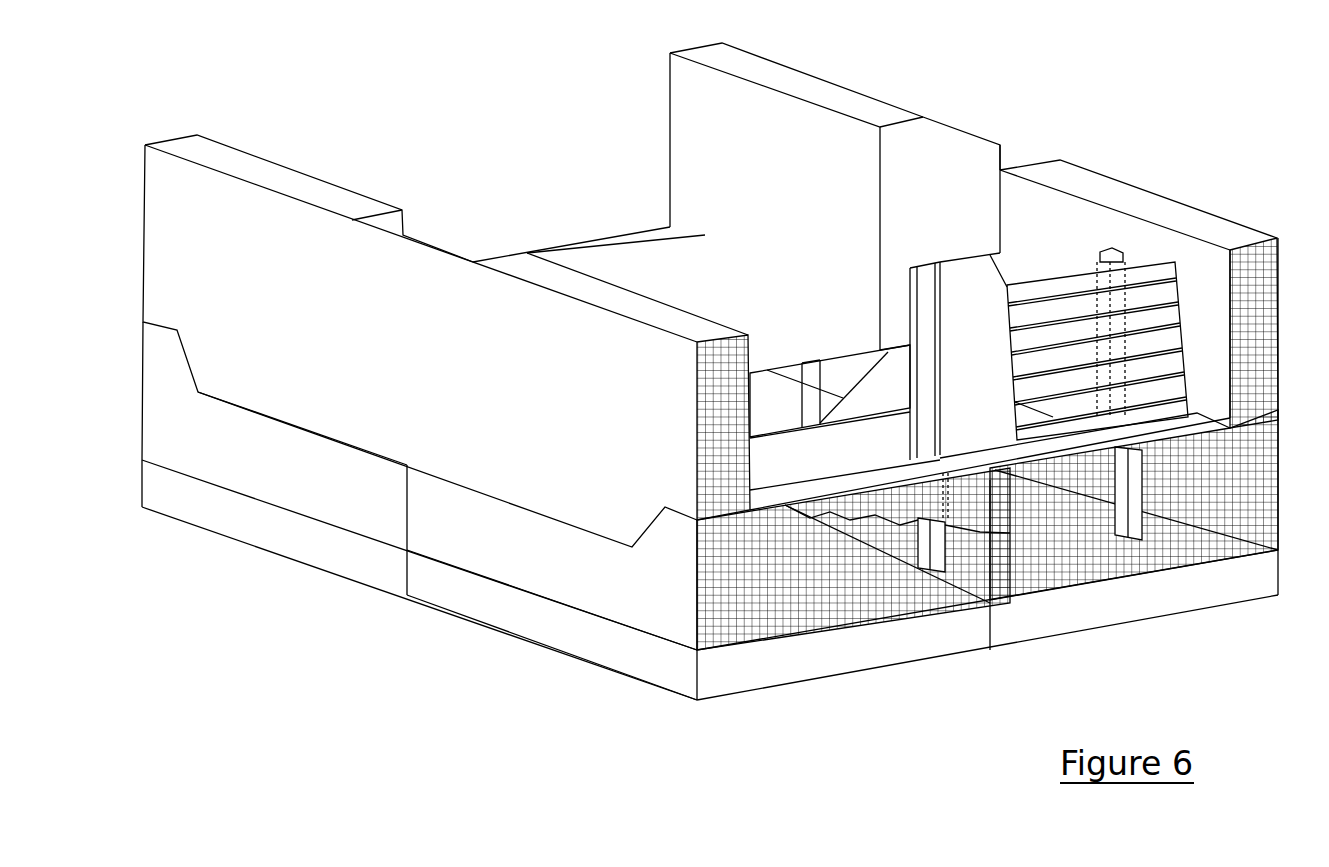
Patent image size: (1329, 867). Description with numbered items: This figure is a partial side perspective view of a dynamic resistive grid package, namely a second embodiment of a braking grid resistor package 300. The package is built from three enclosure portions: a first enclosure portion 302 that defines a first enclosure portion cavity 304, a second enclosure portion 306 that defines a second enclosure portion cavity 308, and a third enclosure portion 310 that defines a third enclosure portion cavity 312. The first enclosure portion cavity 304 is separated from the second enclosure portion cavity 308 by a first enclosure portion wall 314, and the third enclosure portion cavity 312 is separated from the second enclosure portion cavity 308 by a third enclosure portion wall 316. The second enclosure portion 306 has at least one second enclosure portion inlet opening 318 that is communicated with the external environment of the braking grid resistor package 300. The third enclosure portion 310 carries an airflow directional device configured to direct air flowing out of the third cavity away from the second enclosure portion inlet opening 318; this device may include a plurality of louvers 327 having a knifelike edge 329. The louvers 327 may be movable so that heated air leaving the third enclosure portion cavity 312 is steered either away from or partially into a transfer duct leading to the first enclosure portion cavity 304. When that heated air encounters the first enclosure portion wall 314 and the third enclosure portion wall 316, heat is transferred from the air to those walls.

The braking grid resistor package 300 is at (1160, 29).
The first enclosure portion 302 is at (710, 487).
The first enclosure portion cavity 304 is at (403, 598).
The second enclosure portion 306 is at (432, 602).
The second enclosure portion cavity 308 is at (833, 574).
The third enclosure portion 310 is at (446, 324).
The third enclosure portion cavity 312 is at (749, 303).
The first enclosure portion wall 314 is at (1134, 543).
The third enclosure portion wall 316 is at (1030, 575).
The second enclosure portion inlet opening 318 is at (643, 676).
The louvers 327 is at (1139, 286).
The knifelike edge 329 is at (1097, 273).